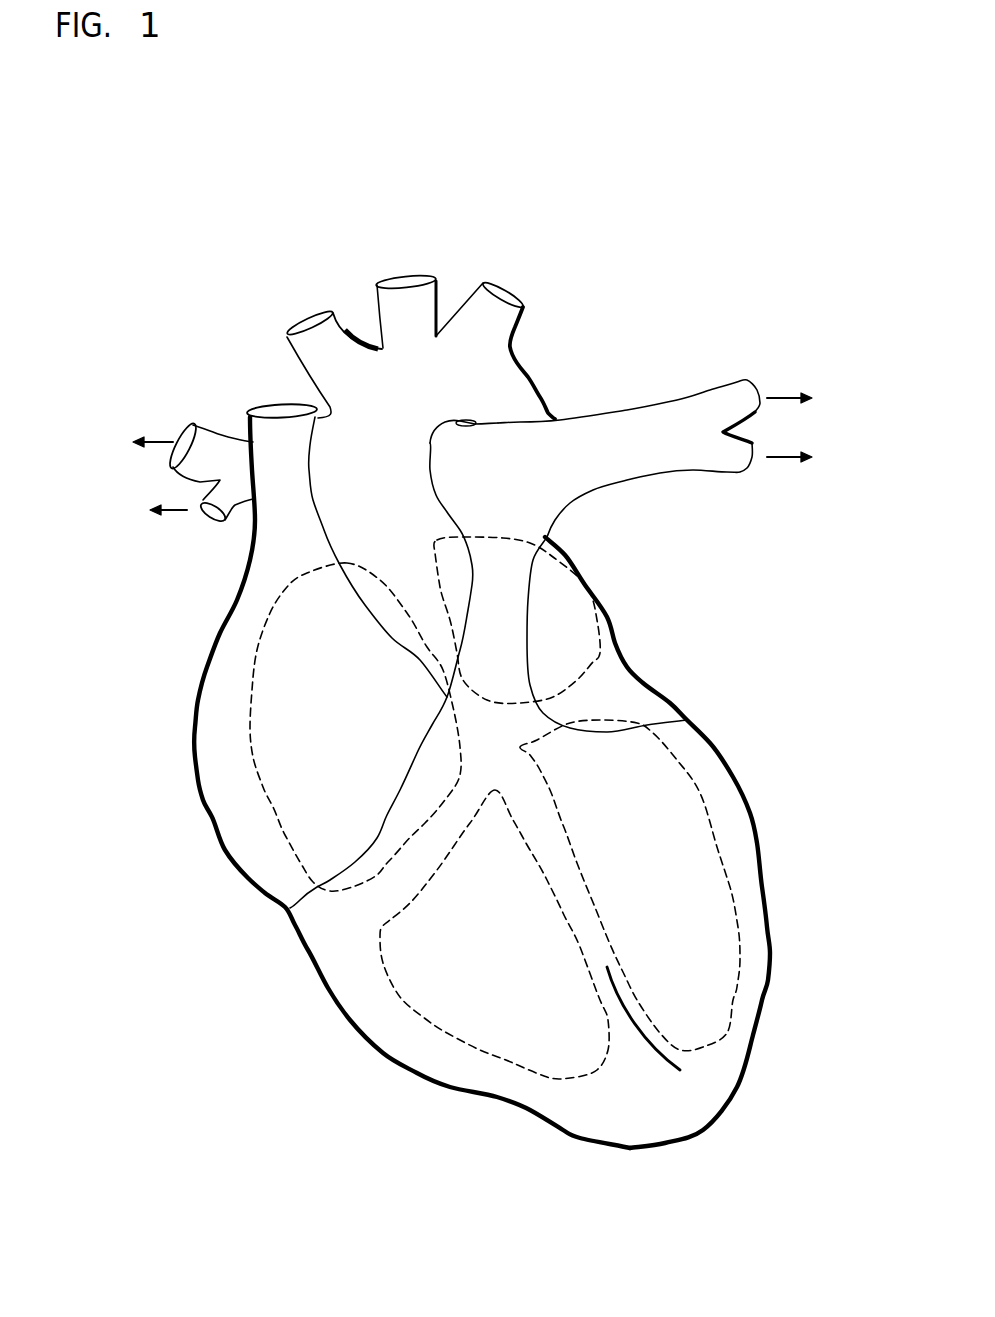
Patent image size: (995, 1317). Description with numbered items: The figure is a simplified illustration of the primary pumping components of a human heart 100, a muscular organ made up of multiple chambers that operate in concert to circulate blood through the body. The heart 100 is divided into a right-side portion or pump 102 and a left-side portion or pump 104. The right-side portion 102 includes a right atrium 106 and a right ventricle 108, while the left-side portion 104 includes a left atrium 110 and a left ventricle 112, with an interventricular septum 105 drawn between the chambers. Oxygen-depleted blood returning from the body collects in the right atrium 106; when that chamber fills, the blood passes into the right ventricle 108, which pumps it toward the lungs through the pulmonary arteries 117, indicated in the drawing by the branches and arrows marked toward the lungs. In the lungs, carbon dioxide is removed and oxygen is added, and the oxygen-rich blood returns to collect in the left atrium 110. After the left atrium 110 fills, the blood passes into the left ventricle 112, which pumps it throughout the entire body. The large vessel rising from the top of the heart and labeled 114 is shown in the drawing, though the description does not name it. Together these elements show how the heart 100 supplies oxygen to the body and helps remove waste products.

The heart 100 is at (242, 347).
The right-side portion or pump 102 is at (257, 921).
The left-side portion or pump 104 is at (781, 814).
The interventricular septum 105 is at (680, 1070).
The right atrium 106 is at (270, 803).
The right ventricle 108 is at (438, 1032).
The left atrium 110 is at (593, 660).
The left ventricle 112 is at (737, 957).
The aorta 114 is at (523, 388).
The pulmonary arteries 117 is at (677, 413).